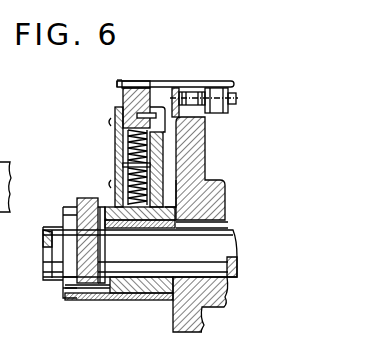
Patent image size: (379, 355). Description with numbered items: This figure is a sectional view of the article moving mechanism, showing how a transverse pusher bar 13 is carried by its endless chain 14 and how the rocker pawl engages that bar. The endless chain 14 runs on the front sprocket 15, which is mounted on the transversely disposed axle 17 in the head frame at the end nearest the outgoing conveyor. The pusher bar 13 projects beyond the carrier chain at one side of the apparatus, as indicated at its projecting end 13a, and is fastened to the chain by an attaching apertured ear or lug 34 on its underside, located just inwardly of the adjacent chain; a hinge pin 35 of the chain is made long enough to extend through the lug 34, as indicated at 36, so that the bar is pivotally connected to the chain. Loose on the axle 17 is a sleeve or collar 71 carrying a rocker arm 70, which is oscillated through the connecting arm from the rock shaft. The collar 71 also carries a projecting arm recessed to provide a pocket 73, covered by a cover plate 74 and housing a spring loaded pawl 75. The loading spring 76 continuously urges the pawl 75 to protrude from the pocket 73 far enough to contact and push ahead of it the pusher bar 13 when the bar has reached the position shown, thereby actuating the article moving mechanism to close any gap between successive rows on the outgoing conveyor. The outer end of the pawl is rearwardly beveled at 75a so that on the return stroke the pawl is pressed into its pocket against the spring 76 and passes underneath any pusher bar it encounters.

The transverse pusher bar 13 is at (223, 81).
The projecting end of pusher bar 13a is at (118, 82).
The endless chain 14 is at (193, 92).
The front sprocket 15 is at (198, 151).
The axle 17 is at (180, 259).
The attaching ear or lug 34 is at (212, 113).
The hinge pin 35 is at (172, 93).
The hinge pin extension through lug 36 is at (214, 80).
The rocker arm 70 is at (86, 198).
The sleeve or collar 71 is at (126, 297).
The pocket 73 is at (178, 181).
The cover plate 74 is at (115, 145).
The spring loaded pawl 75 is at (123, 96).
The bevel on pawl outer end 75a is at (137, 84).
The loading spring 76 is at (124, 182).